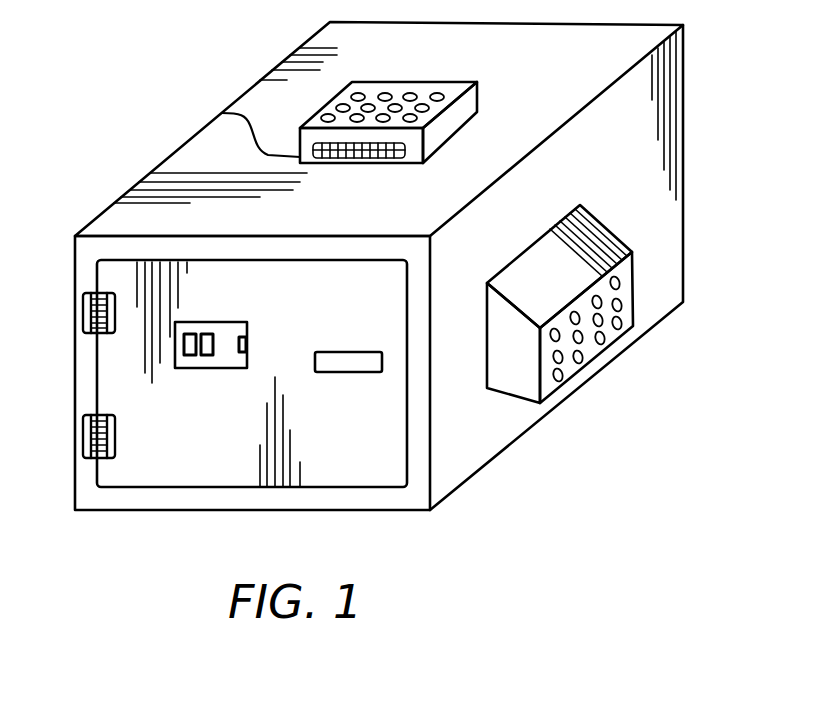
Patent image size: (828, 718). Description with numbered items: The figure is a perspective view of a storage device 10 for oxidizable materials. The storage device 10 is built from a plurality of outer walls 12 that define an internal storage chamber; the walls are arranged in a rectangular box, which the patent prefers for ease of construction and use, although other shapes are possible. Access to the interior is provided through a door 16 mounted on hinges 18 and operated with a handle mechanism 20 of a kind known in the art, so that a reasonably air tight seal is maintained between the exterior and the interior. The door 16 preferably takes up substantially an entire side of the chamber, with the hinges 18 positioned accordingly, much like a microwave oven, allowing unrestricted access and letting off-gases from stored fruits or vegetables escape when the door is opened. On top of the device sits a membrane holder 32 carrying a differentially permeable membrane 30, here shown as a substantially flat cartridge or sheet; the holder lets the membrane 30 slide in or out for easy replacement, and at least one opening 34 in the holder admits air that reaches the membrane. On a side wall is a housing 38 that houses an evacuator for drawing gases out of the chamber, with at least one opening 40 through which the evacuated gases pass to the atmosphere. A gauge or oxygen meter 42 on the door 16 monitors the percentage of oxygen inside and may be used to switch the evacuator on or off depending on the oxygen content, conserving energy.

The storage device 10 is at (704, 161).
The outer walls 12 is at (653, 237).
The door 16 is at (170, 447).
The hinges 18 is at (83, 308).
The handle mechanism 20 is at (338, 362).
The differentially permeable membrane 30 is at (222, 113).
The membrane holder 32 is at (478, 92).
The opening 34 is at (408, 96).
The housing 38 is at (520, 370).
The opening 40 is at (620, 306).
The gauge or oxygen meter 42 is at (224, 370).